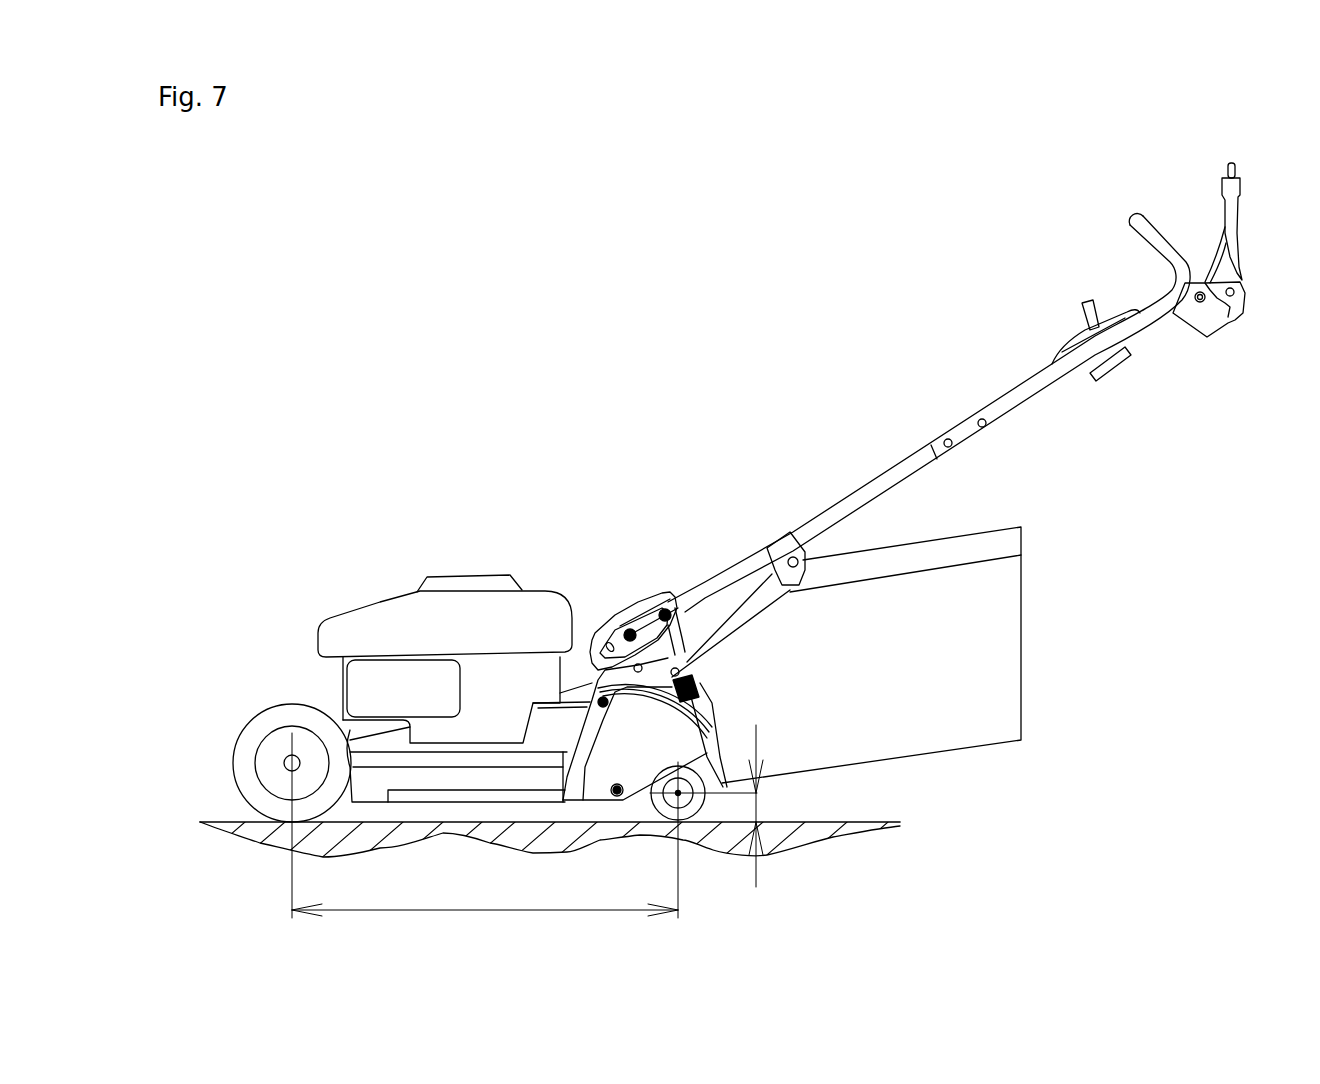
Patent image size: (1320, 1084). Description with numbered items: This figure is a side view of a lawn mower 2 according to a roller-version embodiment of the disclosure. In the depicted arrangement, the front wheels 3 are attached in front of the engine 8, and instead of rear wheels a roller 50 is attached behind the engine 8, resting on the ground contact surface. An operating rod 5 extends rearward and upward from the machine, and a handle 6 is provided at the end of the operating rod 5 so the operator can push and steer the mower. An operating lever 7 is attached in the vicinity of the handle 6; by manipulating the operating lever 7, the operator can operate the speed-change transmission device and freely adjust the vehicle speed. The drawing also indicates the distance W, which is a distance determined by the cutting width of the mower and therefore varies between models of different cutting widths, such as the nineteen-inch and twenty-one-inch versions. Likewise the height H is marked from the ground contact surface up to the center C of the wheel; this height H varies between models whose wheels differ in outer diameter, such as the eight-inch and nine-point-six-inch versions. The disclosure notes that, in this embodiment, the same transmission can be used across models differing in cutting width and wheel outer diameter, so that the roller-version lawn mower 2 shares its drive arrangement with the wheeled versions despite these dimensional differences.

The lawn mower 2 is at (632, 557).
The front wheel 3 is at (235, 750).
The operating rod 5 is at (858, 487).
The handle 6 is at (1133, 215).
The operating lever 7 is at (1086, 300).
The engine 8 is at (378, 592).
The roller 50 is at (700, 823).
The distance W is at (485, 893).
The height H is at (770, 806).
The center C is at (720, 757).